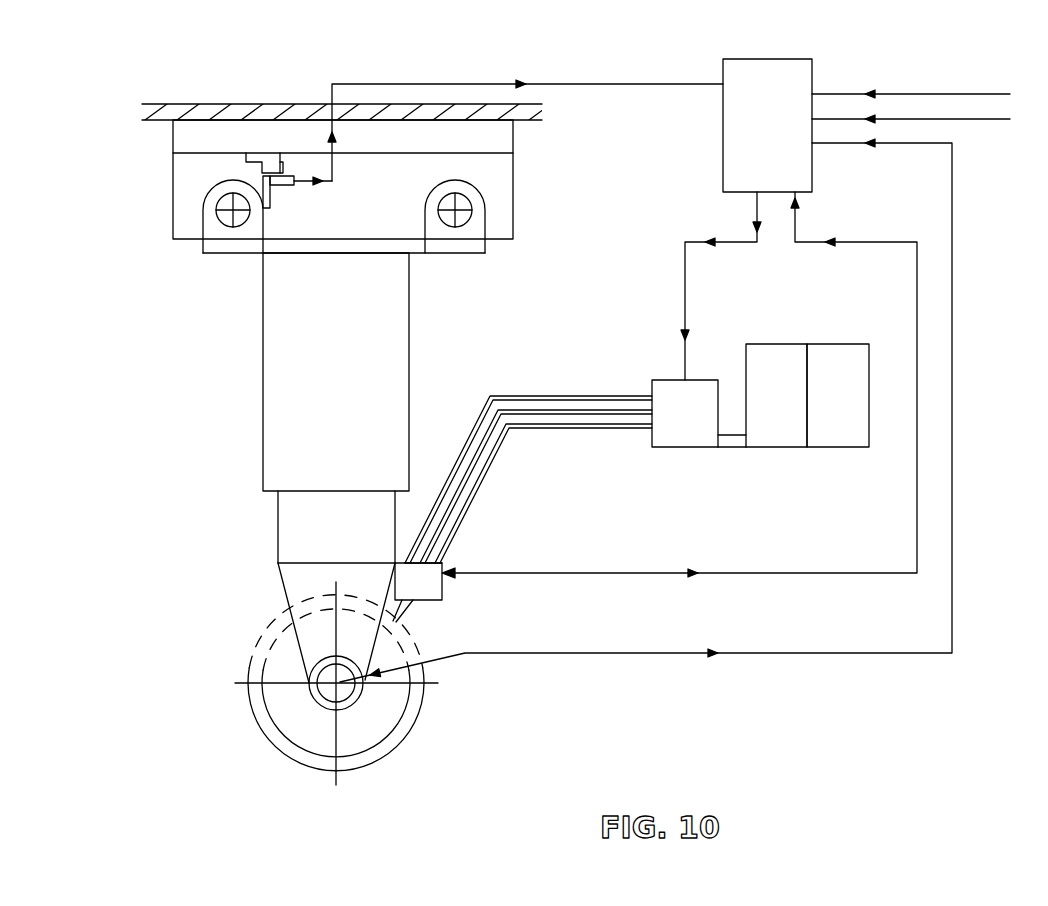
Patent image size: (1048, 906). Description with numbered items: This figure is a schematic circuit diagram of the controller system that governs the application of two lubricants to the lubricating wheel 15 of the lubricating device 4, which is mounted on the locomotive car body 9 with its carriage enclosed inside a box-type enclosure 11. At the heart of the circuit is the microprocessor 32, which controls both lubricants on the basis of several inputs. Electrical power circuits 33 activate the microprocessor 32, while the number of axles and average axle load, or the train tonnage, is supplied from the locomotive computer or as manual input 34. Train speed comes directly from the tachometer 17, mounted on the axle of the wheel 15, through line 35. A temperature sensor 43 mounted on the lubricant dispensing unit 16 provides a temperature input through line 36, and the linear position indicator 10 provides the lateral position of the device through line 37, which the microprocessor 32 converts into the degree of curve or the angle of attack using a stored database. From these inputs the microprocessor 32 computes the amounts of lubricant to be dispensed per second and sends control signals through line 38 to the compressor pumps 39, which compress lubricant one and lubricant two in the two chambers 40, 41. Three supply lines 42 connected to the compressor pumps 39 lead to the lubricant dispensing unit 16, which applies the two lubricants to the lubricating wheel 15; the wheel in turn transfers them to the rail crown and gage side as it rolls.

The lubricating device 4 is at (284, 468).
The locomotive car body 9 is at (346, 76).
The linear position indicator 10 is at (272, 167).
The box-type enclosure 11 is at (297, 193).
The lubricating wheel 15 is at (381, 683).
The lubricant dispensing unit 16 is at (458, 597).
The tachometer 17 is at (235, 713).
The microprocessor 32 is at (767, 125).
The electrical power circuits 33 is at (927, 93).
The manual input 34 is at (927, 119).
The line 35 is at (688, 410).
The line 36 is at (686, 382).
The line 37 is at (525, 104).
The line 38 is at (728, 286).
The compressor pumps 39 is at (699, 413).
The chamber 40 is at (776, 395).
The chamber 41 is at (838, 395).
The cable conductors 42 is at (528, 479).
The temperature sensor 43 is at (485, 537).